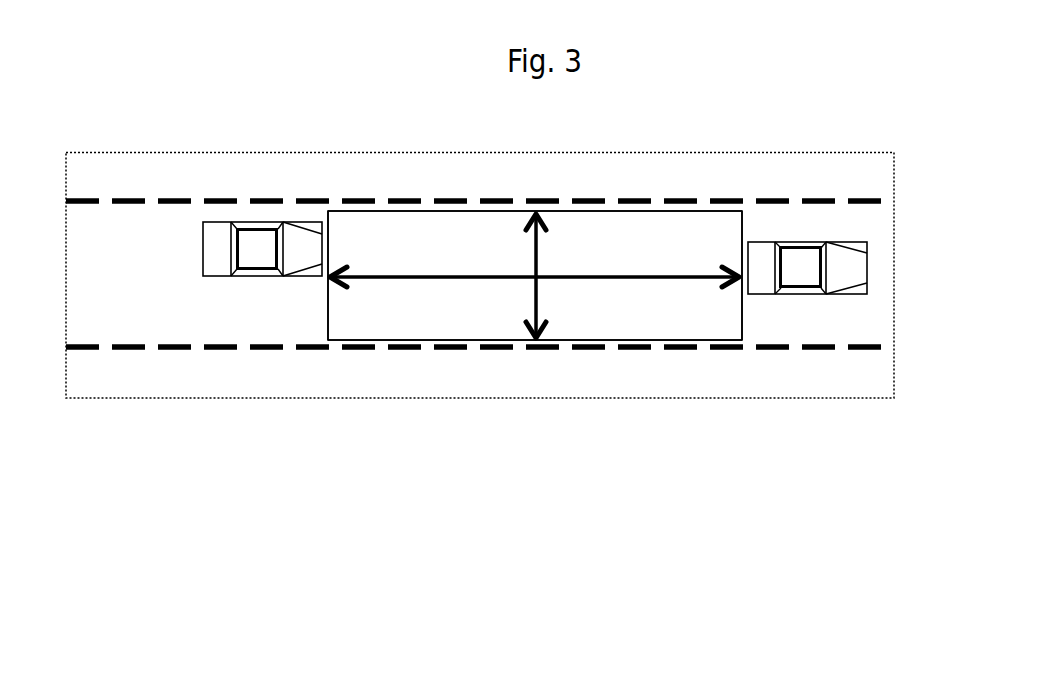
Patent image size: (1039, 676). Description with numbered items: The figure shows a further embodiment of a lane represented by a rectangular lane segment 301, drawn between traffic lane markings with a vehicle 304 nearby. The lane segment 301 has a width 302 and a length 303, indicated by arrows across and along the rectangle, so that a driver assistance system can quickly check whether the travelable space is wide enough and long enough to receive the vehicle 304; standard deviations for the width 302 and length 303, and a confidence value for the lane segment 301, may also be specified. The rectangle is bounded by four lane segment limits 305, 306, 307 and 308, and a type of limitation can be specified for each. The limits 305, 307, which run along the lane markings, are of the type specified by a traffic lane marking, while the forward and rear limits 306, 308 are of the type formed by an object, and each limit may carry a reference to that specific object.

The lane segment 301 is at (657, 308).
The width 302 is at (536, 294).
The length 303 is at (690, 280).
The vehicle 304 is at (248, 250).
The lane segment limit 305 is at (490, 211).
The lane segment limit 306 is at (742, 307).
The lane segment limit 307 is at (379, 340).
The lane segment limit 308 is at (328, 302).